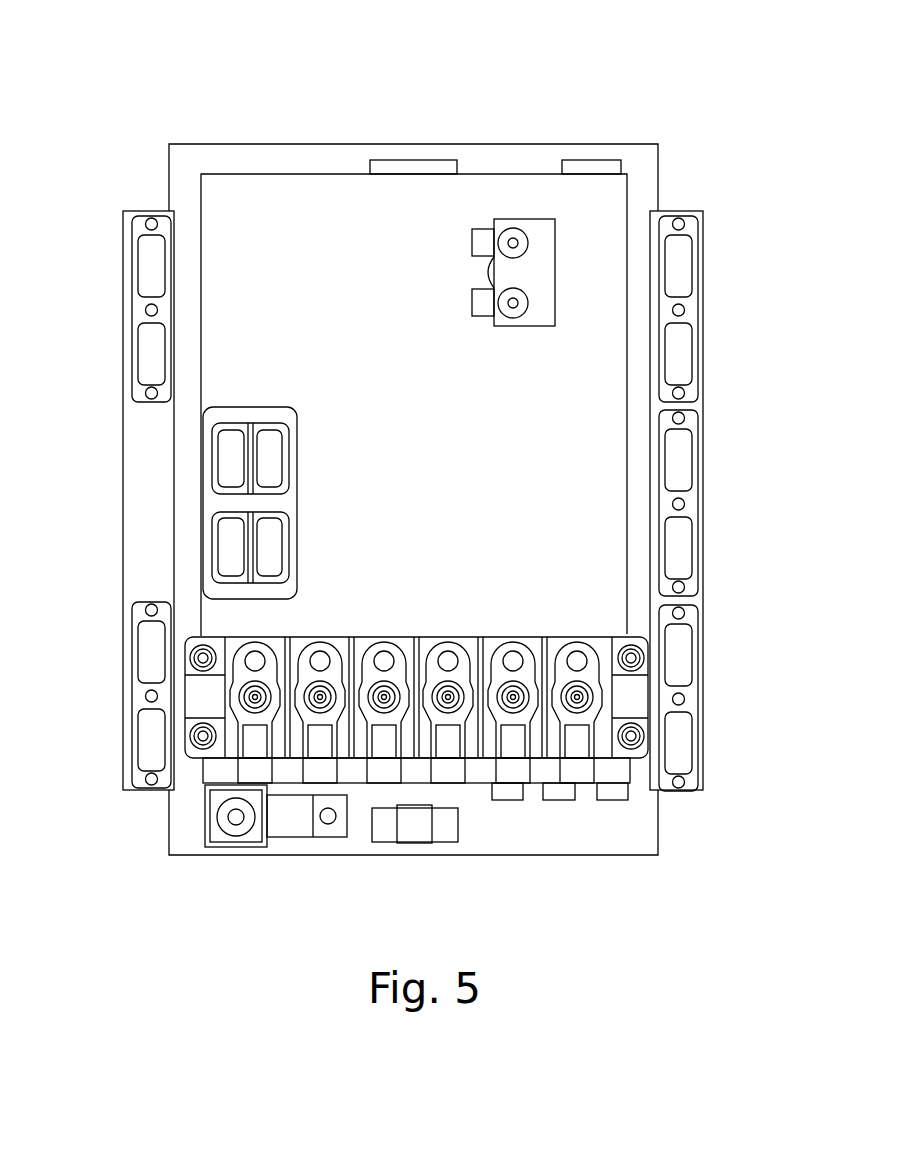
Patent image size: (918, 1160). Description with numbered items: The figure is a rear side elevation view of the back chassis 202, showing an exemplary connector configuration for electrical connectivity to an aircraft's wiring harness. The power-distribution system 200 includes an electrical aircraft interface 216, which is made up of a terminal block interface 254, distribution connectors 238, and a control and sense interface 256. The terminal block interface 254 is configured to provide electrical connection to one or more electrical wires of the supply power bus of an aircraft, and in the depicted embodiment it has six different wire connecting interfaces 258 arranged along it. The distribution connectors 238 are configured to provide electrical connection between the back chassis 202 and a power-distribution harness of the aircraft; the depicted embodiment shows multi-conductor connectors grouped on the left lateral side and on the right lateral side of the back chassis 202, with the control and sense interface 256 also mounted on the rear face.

The power-distribution system 200 is at (183, 104).
The back chassis 202 is at (647, 158).
The electrical aircraft interface 216 is at (687, 814).
The distribution connectors 238 is at (683, 267).
The terminal block interface 254 is at (207, 753).
The control and sense interface 256 is at (318, 515).
The wire connecting interfaces 258 is at (577, 697).